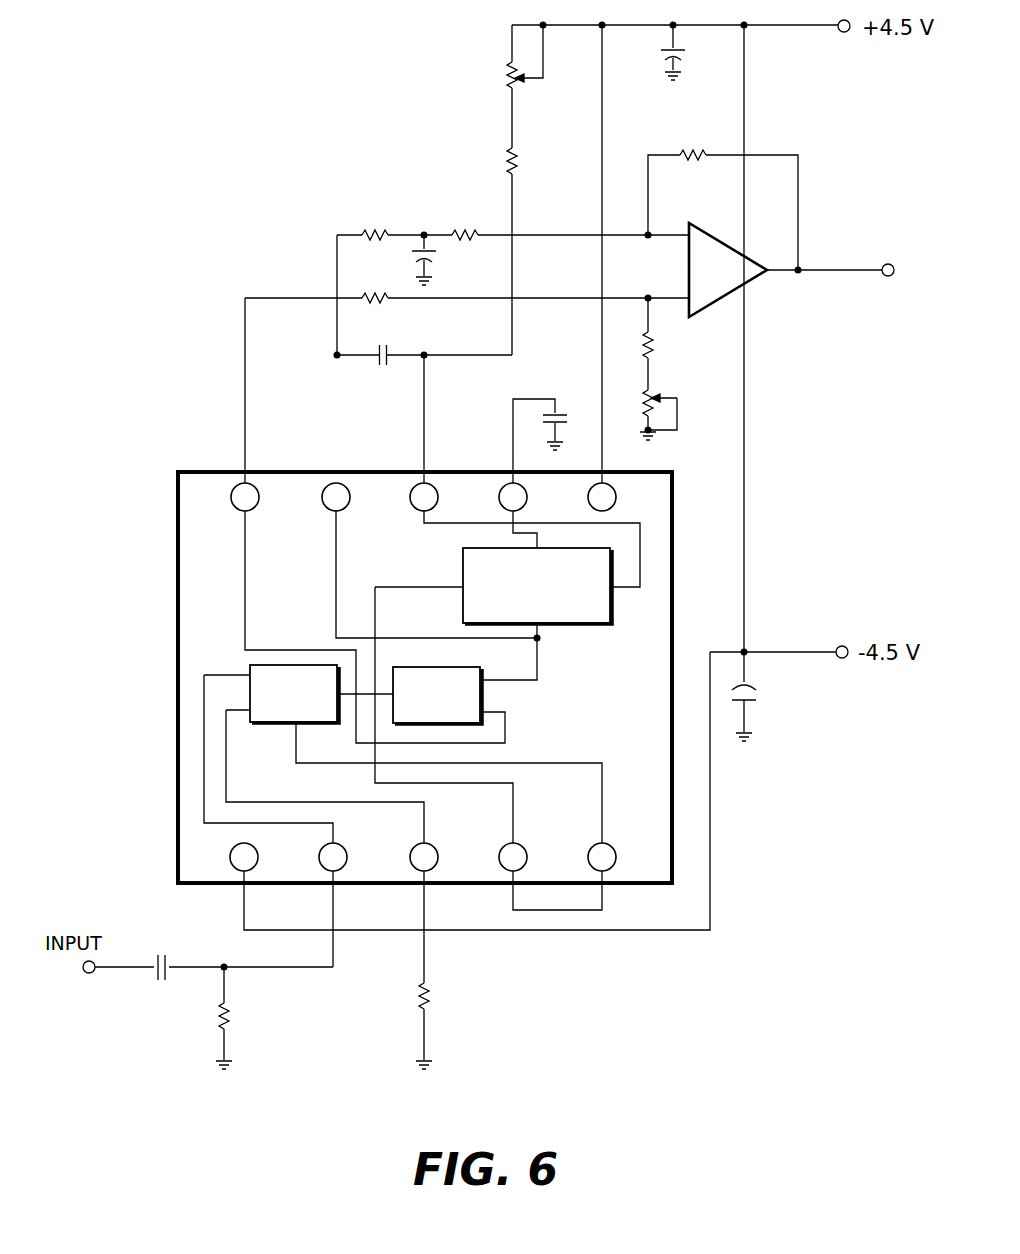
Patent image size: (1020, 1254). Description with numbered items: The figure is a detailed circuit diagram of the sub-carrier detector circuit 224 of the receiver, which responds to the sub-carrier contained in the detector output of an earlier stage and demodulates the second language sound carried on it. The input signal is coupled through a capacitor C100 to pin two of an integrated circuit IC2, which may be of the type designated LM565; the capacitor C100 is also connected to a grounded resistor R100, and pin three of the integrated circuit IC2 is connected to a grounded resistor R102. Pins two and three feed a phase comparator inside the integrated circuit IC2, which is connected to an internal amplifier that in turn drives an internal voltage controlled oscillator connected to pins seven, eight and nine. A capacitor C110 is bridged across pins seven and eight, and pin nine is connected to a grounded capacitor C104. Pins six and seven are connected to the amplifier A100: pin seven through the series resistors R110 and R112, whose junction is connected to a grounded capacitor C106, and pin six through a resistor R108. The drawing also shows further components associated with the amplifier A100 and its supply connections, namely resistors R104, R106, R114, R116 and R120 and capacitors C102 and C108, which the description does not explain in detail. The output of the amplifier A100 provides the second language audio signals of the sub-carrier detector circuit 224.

The grounded resistor R100 is at (229, 1013).
The grounded resistor R102 is at (421, 995).
The resistor R104 is at (652, 338).
The variable resistor R106 is at (656, 394).
The resistor R108 is at (372, 295).
The resistor R110 is at (375, 231).
The resistor R112 is at (470, 231).
The variable resistor R114 is at (509, 80).
The resistor R116 is at (510, 158).
The feedback resistor R120 is at (690, 153).
The capacitor C100 is at (152, 974).
The capacitor C102 is at (754, 700).
The grounded capacitor C104 is at (560, 413).
The grounded capacitor C106 is at (433, 259).
The capacitor C108 is at (676, 62).
The capacitor C110 is at (390, 351).
The amplifier A100 is at (815, 270).
The integrated circuit IC2 is at (186, 703).
The sub-carrier detector circuit 224 is at (667, 1023).